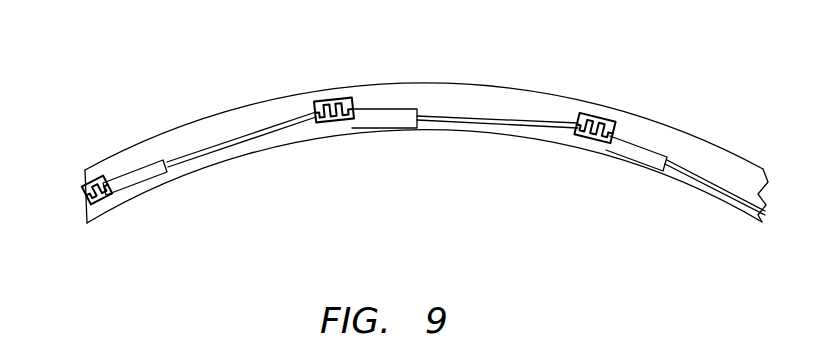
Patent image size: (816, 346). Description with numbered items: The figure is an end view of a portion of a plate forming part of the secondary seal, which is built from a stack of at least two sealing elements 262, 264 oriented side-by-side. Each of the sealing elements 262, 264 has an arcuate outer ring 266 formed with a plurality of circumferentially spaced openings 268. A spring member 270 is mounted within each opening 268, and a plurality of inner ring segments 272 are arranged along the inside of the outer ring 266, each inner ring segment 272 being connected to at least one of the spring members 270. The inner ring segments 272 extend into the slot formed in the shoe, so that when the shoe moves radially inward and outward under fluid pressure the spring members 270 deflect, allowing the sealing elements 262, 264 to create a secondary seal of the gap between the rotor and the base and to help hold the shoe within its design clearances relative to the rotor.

The sealing element 262 is at (426, 115).
The sealing element 264 is at (426, 131).
The outer ring 266 is at (214, 103).
The opening 268 is at (90, 179).
The spring member 270 is at (84, 207).
The inner ring segment 272 is at (144, 191).